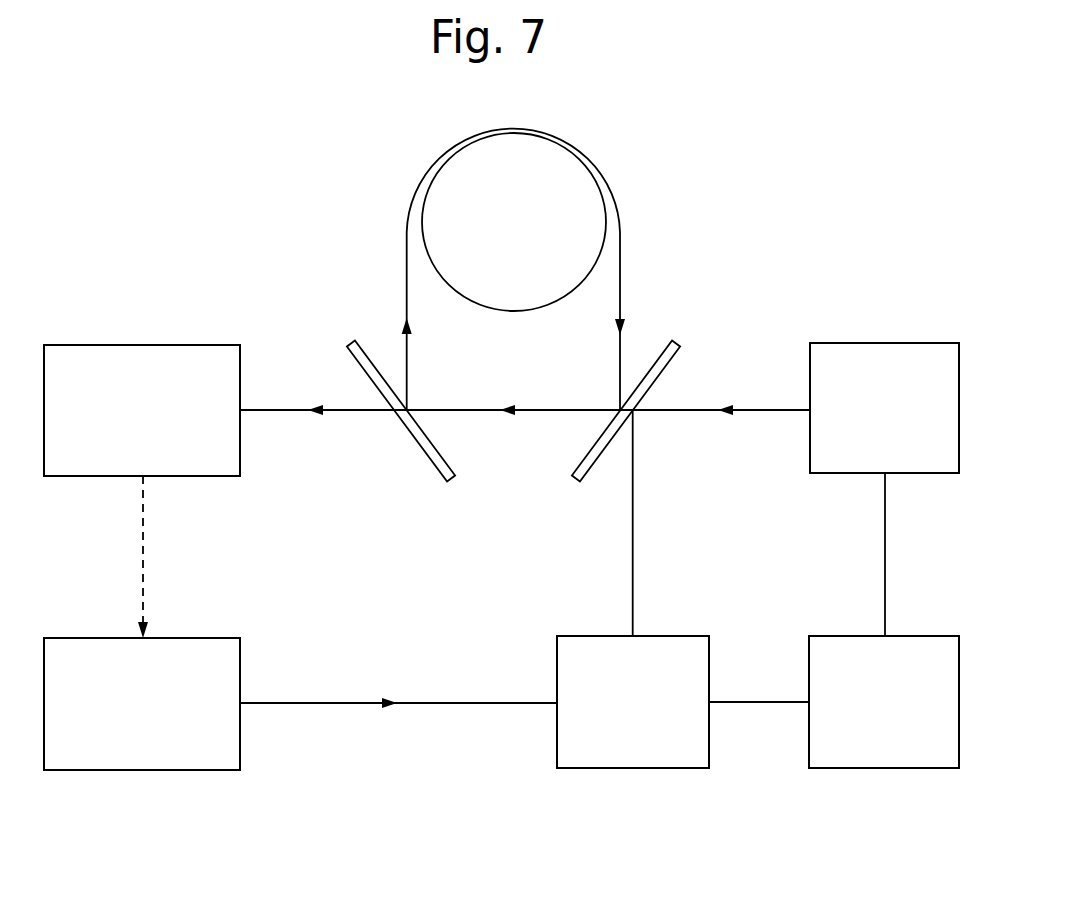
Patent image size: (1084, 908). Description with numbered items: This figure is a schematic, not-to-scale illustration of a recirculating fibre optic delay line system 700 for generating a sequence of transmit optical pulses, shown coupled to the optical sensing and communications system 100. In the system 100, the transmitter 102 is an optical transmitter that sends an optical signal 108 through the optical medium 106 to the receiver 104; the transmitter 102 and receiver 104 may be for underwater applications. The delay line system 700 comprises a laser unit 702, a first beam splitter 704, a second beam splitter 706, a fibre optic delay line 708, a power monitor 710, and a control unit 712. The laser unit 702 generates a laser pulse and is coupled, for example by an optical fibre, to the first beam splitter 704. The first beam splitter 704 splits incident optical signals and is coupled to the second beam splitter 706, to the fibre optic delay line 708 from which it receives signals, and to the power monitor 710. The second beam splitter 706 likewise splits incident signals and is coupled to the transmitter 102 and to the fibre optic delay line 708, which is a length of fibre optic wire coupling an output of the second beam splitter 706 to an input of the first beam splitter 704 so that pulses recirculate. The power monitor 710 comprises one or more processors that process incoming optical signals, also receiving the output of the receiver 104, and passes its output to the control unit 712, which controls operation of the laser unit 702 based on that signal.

The optical sensing and communications system 100 is at (177, 268).
The transmitter 102 is at (86, 345).
The receiver 104 is at (118, 770).
The optical medium 106 is at (112, 558).
The optical signal 108 is at (143, 523).
The recirculating fibre optic delay line system 700 is at (755, 201).
The laser unit 702 is at (910, 343).
The first beam splitter 704 is at (668, 341).
The second beam splitter 706 is at (428, 458).
The fibre optic delay line 708 is at (588, 160).
The power monitor 710 is at (618, 768).
The control unit 712 is at (885, 768).